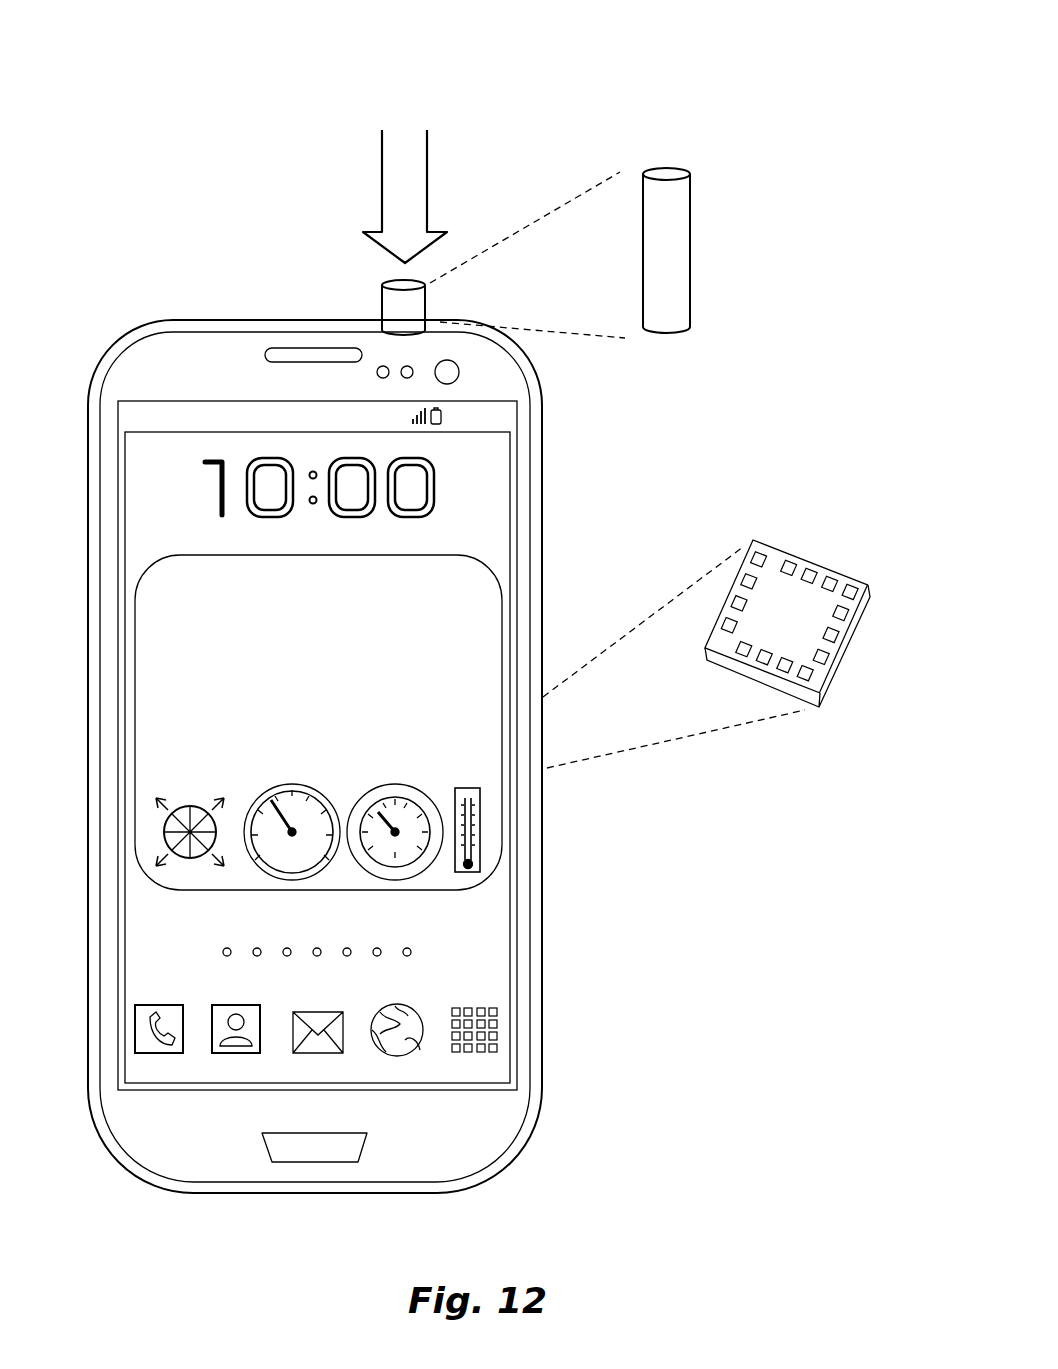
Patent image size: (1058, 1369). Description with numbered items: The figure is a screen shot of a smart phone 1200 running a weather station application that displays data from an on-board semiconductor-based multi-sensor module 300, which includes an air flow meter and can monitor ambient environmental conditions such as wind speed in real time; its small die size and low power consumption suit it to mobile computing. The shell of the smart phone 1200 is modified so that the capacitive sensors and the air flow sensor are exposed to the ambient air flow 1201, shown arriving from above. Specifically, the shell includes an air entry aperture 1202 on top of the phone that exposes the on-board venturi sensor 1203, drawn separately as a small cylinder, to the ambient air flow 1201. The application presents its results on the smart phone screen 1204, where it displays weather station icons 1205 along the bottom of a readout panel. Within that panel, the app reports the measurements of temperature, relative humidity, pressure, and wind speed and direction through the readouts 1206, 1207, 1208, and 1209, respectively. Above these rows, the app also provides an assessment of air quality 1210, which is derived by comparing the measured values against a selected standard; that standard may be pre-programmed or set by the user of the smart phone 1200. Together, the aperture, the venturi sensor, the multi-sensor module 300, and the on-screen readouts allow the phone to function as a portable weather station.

The smart phone 1200 is at (618, 36).
The ambient air flow 1201 is at (403, 183).
The air entry aperture 1202 is at (428, 285).
The venturi sensor 1203 is at (667, 240).
The smart phone screen 1204 is at (480, 482).
The weather station icons 1205 is at (488, 840).
The temperature readout 1206 is at (462, 612).
The relative humidity readout 1207 is at (470, 648).
The pressure readout 1208 is at (473, 677).
The wind speed and direction readout 1209 is at (540, 730).
The air quality assessment 1210 is at (462, 578).
The multi-sensor module 300 is at (768, 595).